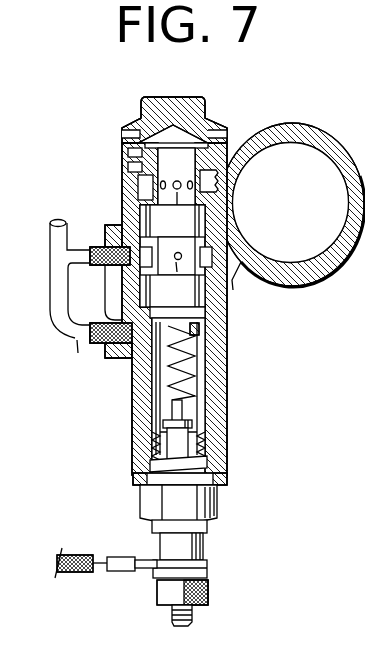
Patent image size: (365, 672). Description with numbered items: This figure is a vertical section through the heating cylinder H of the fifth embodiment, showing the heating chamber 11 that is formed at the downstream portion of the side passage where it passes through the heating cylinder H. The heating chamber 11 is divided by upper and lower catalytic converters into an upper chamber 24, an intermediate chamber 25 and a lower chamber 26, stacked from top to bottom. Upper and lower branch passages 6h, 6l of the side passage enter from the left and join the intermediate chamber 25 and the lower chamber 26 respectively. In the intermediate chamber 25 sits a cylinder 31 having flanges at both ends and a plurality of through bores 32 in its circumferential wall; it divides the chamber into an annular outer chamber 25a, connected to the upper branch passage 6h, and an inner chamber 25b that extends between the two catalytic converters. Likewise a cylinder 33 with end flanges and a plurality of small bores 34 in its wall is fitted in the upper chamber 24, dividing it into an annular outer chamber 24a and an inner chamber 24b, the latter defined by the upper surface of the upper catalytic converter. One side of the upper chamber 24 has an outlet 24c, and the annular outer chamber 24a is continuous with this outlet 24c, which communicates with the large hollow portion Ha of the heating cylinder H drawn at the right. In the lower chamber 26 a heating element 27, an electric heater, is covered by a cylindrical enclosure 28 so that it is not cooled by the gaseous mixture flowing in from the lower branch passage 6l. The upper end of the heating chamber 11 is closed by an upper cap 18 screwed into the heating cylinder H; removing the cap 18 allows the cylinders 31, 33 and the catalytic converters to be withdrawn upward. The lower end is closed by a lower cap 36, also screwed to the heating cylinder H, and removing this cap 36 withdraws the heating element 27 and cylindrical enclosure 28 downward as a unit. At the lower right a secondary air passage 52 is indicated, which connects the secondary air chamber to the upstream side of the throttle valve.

The upper cap 18 is at (166, 104).
The upper chamber 24 is at (175, 163).
The annular outer chamber 24a is at (146, 184).
The inner chamber 24b is at (172, 221).
The outlet 24c is at (218, 182).
The intermediate chamber 25 is at (165, 247).
The annular outer chamber 25a is at (212, 250).
The inner chamber 25b is at (172, 291).
The cylinder 33 is at (133, 150).
The small bores 34 is at (135, 165).
The cylinder 31 is at (128, 283).
The through bores 32 is at (233, 290).
The upper branch passage 6h is at (73, 278).
The lower branch passage 6l is at (91, 351).
The lower chamber 26 is at (132, 358).
The heating chamber 11 is at (195, 316).
The heating element 27 is at (190, 380).
The cylindrical enclosure 28 is at (155, 403).
The lower cap 36 is at (218, 499).
The secondary air passage 52 is at (362, 546).
The heating cylinder H is at (305, 124).
The hollow portion Ha is at (308, 219).